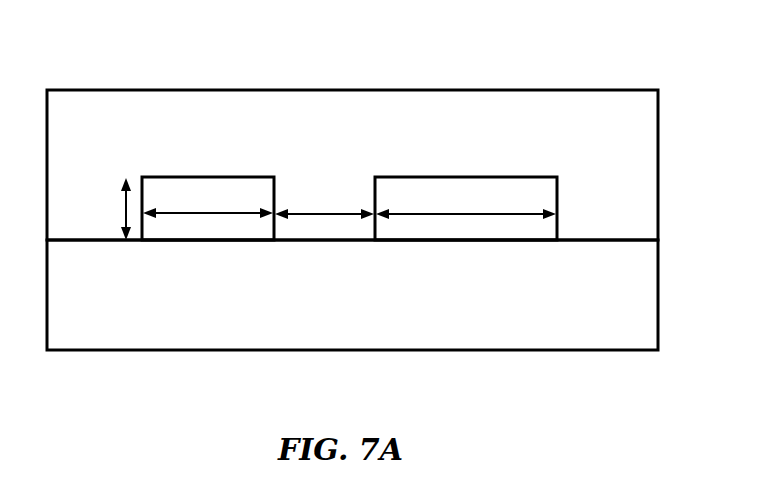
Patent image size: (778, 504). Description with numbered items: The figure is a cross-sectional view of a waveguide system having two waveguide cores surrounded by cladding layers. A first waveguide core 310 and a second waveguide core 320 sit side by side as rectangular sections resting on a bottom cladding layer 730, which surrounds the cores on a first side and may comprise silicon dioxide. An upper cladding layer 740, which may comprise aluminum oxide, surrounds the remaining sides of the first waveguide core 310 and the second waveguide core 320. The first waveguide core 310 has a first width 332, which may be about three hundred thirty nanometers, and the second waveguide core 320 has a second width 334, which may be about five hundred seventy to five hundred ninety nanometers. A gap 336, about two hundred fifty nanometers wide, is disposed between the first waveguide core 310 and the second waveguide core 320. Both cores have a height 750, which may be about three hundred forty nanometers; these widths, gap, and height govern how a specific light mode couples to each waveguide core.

The upper cladding layer 740 is at (360, 102).
The bottom cladding layer 730 is at (345, 342).
The first waveguide core 310 is at (225, 177).
The second waveguide core 320 is at (462, 177).
The first width W1 332 is at (159, 213).
The second width W2 334 is at (405, 213).
The gap 336 is at (317, 185).
The height H 750 is at (122, 223).